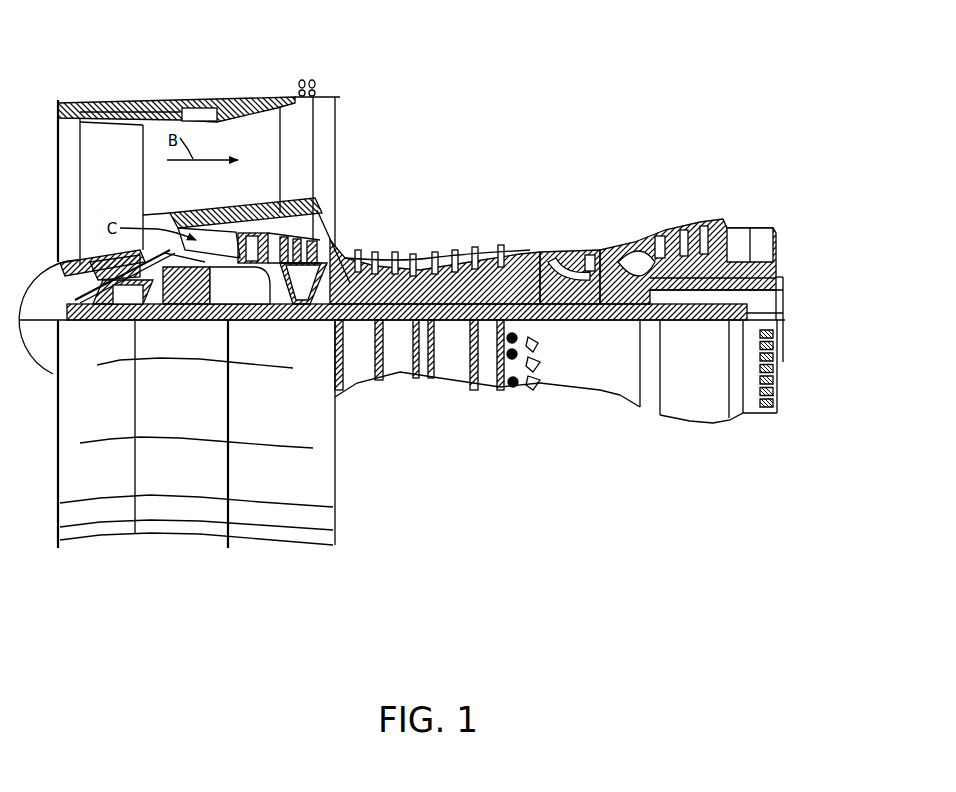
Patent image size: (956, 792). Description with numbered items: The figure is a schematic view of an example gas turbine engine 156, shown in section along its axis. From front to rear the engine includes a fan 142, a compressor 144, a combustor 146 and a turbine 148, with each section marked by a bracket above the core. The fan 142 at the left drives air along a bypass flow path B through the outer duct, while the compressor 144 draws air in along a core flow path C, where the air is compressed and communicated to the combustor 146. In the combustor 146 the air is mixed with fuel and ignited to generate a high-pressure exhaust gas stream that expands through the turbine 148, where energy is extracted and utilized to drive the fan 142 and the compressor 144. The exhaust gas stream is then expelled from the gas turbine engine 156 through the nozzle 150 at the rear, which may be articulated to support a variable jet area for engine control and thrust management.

The fan 142 is at (48, 84).
The compressor 144 is at (225, 193).
The combustor 146 is at (540, 193).
The turbine 148 is at (597, 193).
The nozzle 150 is at (788, 332).
The gas turbine engine 156 is at (552, 137).